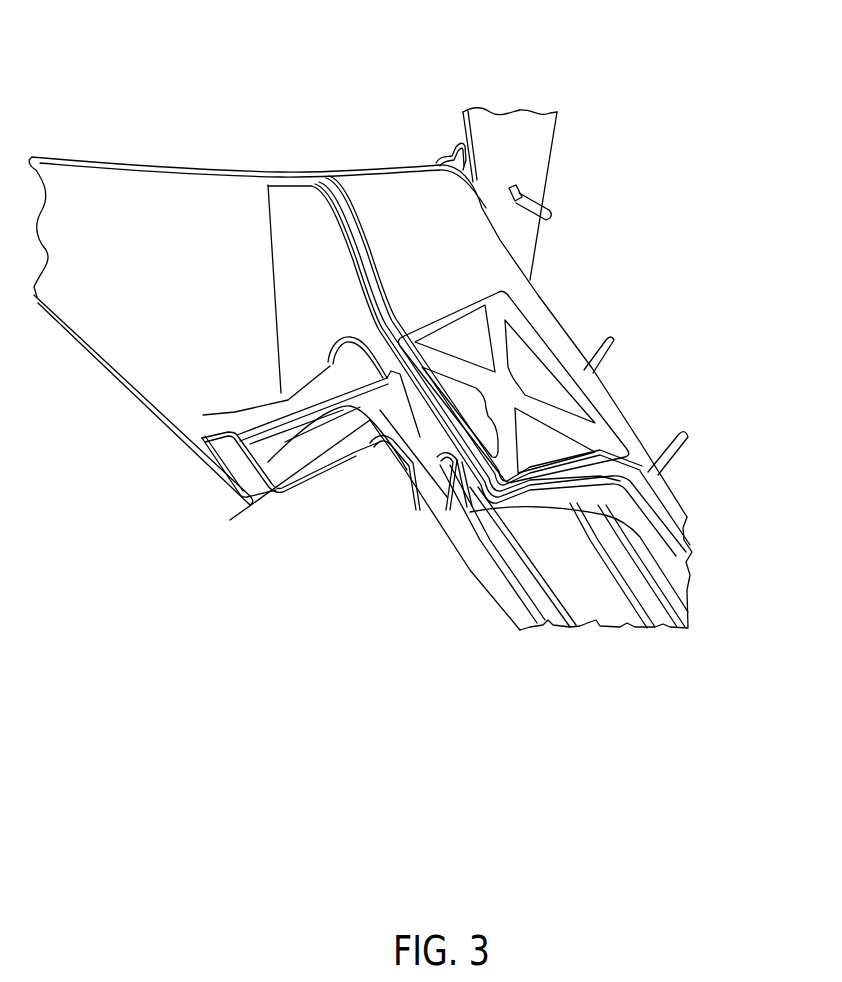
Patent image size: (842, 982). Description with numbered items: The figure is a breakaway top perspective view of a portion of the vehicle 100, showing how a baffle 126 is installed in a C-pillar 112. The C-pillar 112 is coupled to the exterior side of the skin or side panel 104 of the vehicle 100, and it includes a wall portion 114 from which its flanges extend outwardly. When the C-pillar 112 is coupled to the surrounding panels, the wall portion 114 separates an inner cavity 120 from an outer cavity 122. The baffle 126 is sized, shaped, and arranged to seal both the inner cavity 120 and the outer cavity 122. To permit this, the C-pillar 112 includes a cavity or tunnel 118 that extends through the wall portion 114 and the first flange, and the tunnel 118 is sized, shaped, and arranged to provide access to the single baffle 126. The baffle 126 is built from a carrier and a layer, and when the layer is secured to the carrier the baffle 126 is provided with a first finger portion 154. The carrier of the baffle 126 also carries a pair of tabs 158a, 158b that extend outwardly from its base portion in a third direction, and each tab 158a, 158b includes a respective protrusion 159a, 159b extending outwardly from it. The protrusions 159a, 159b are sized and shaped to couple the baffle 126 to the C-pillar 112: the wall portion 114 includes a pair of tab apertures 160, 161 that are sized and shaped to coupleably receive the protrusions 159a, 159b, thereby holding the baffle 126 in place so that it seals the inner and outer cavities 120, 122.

The vehicle 100 is at (383, 70).
The side panel 104 is at (307, 470).
The C-pillar 112 is at (317, 210).
The wall portion 114 is at (440, 455).
The tunnel 118 is at (335, 345).
The inner cavity 120 is at (424, 206).
The outer cavity 122 is at (281, 392).
The baffle 126 is at (513, 358).
The first finger portion 154 is at (300, 395).
The first tab 158a is at (300, 473).
The second tab 158b is at (465, 490).
The first protrusion 159a is at (245, 498).
The second protrusion 159b is at (457, 453).
The first tab aperture 160 is at (285, 442).
The second tab aperture 161 is at (433, 493).